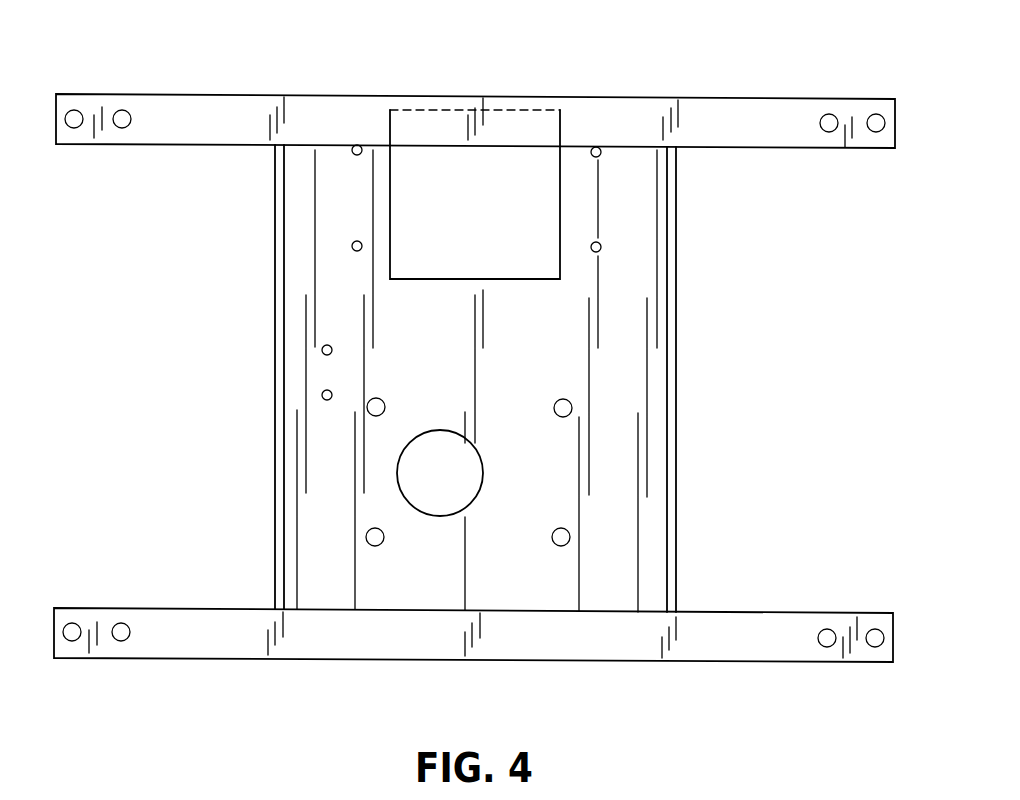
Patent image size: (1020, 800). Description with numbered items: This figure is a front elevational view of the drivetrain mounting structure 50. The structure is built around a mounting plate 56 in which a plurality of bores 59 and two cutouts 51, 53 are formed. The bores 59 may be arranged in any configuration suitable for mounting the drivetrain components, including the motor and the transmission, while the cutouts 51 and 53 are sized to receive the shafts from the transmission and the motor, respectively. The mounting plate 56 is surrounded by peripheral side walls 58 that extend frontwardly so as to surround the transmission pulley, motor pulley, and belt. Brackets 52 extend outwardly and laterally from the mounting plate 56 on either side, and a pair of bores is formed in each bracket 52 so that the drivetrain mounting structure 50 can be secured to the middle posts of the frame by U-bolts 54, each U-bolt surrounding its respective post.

The drivetrain mounting structure 50 is at (643, 60).
The cutout 51 is at (465, 498).
The bracket 52 is at (110, 121).
The cutout 53 is at (468, 279).
The mounting hole 54 is at (876, 133).
The mounting plate 56 is at (476, 361).
The peripheral side wall 58 is at (280, 353).
The bore 59 is at (600, 253).